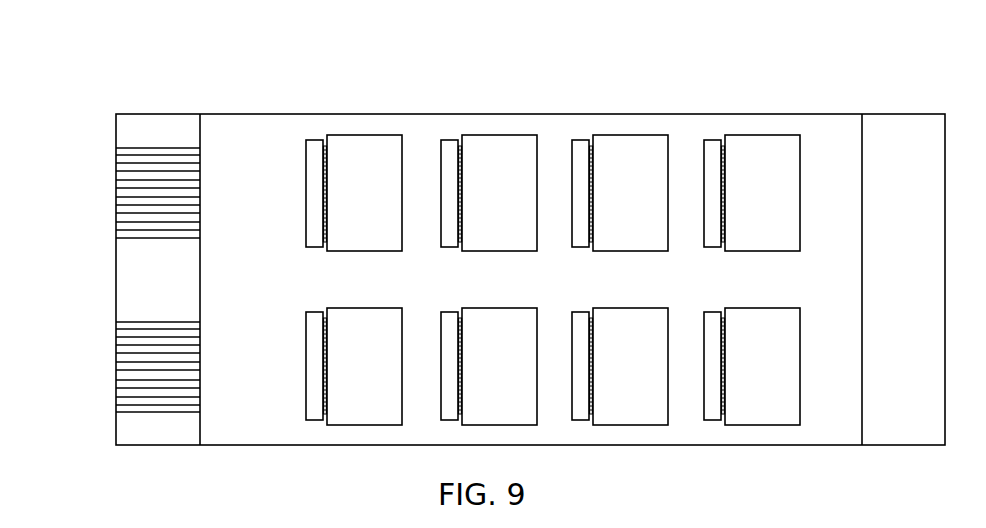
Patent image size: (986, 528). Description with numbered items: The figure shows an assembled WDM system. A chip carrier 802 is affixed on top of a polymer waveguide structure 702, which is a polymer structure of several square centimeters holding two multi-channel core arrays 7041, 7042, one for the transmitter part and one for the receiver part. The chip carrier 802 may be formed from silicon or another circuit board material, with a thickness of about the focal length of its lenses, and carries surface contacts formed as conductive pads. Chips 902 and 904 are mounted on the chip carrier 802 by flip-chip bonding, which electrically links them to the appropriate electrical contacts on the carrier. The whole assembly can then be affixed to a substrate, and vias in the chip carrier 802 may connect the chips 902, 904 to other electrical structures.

The polymer waveguide structure 702 is at (155, 113).
The chip carrier 802 is at (230, 113).
The multi-channel core array 7041 is at (108, 148).
The multi-channel core array 7042 is at (108, 323).
The chip 902 is at (307, 139).
The chip 904 is at (500, 134).